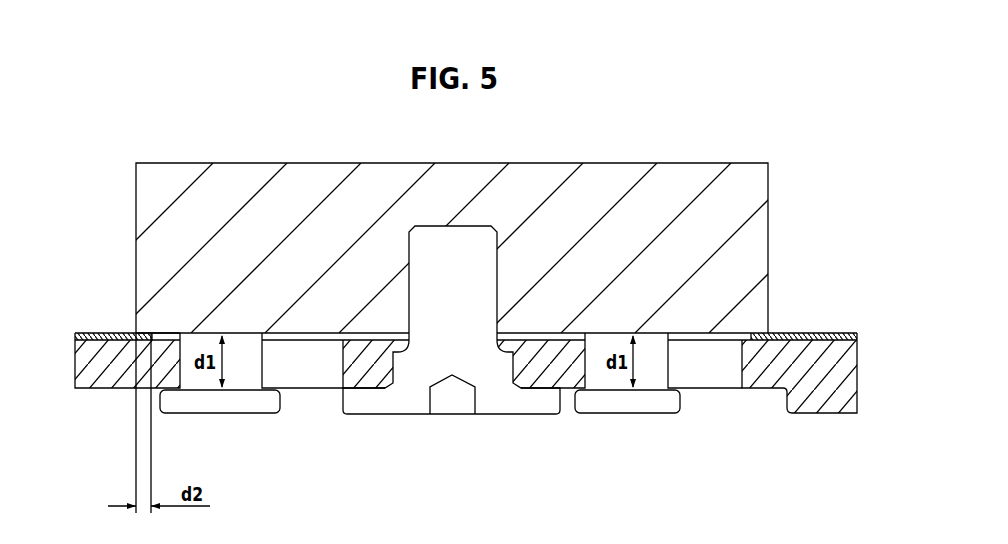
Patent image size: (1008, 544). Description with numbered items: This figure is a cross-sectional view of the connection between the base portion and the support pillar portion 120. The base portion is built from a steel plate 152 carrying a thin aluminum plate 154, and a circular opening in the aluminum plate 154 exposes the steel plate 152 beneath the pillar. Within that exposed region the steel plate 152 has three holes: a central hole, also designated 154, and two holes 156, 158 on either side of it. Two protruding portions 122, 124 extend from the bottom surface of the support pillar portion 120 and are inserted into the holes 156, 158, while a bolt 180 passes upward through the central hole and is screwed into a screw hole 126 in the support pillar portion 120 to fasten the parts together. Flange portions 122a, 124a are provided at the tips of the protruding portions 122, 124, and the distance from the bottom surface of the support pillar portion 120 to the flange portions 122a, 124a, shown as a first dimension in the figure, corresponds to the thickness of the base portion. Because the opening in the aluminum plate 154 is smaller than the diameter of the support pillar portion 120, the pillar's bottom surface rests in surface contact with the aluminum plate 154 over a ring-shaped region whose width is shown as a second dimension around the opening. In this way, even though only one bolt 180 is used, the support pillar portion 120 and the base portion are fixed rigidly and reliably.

The support pillar portion 120 is at (153, 213).
The protruding portion 122 is at (243, 380).
The flange portion 122a is at (158, 398).
The protruding portion 124 is at (605, 378).
The flange portion 124a is at (687, 410).
The screw hole 126 is at (497, 313).
The steel plate 152 is at (106, 378).
The aluminum plate 154 is at (85, 333).
The hole 156 is at (294, 378).
The hole 158 is at (723, 378).
The bolt 180 is at (377, 405).